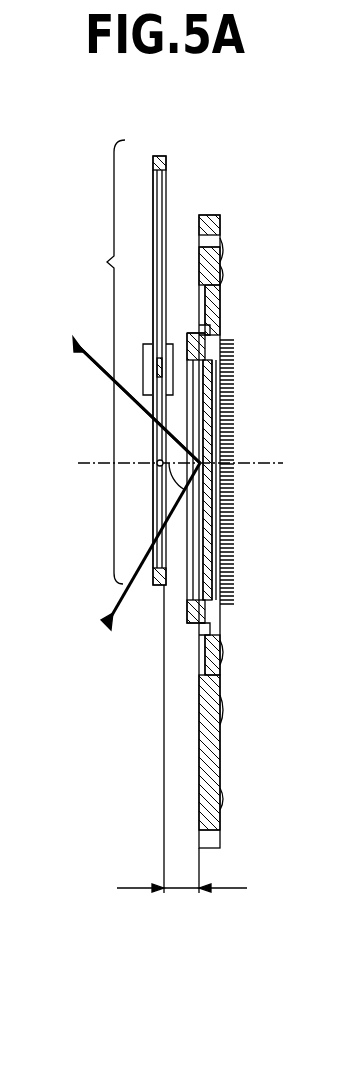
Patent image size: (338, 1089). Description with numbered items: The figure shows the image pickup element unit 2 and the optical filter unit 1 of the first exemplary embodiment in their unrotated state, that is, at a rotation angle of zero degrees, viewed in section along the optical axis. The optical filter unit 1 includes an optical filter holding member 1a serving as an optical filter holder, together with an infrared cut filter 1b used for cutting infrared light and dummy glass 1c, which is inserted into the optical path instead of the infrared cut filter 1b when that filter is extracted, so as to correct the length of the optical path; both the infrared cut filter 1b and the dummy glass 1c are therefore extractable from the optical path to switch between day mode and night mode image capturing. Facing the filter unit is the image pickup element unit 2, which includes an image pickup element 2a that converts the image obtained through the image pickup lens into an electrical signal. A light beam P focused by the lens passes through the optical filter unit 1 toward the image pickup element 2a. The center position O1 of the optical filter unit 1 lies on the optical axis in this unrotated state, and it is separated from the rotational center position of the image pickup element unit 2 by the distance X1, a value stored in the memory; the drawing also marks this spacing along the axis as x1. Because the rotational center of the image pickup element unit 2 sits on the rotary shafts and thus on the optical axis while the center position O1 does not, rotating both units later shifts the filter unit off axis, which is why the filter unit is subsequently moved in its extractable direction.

The optical filter unit 1 is at (131, 362).
The optical filter holding member 1a is at (160, 156).
The infrared cut filter 1b is at (152, 578).
The dummy glass 1c is at (152, 210).
The image pickup element unit 2 is at (231, 507).
The image pickup element 2a is at (203, 380).
The center position of the optical filter unit O1 is at (150, 468).
The light beam P is at (73, 340).
The distance between rotational center position of the image pickup element unit and X1 is at (200, 498).
The distance between lens and sensor x1 is at (182, 739).